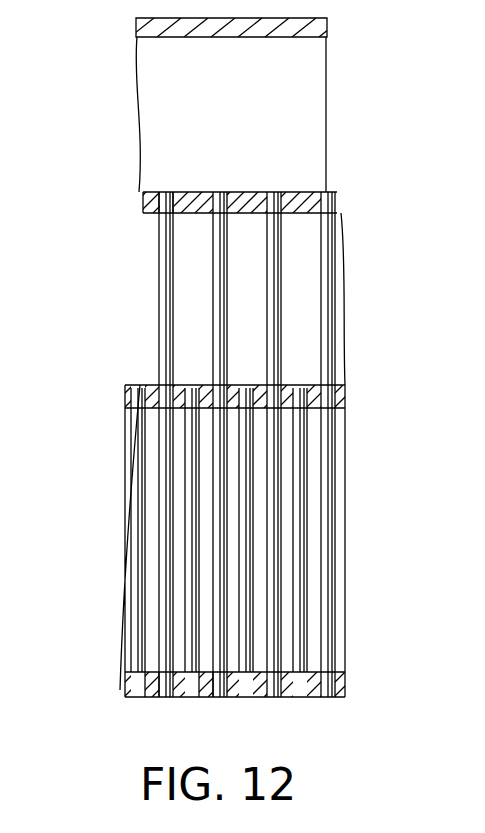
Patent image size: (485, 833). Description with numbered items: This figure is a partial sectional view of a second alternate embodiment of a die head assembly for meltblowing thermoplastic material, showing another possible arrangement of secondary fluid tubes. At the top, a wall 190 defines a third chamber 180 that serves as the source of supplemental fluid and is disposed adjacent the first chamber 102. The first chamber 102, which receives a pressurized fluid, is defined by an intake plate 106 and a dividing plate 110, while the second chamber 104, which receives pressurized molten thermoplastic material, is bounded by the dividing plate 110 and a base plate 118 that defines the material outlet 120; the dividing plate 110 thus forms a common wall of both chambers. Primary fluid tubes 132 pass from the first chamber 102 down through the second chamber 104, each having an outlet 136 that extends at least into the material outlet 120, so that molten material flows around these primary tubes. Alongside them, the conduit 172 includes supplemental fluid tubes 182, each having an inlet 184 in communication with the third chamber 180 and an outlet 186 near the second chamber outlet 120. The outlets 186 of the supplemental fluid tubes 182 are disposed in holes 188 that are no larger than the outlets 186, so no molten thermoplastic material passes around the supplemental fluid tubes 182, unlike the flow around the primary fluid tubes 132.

The wall 190 is at (136, 25).
The third chamber 180 is at (250, 122).
The intake plate 106 is at (145, 203).
The inlet 184 is at (165, 193).
The supplemental fluid tube 182 is at (165, 287).
The conduit 172 is at (144, 323).
The first chamber 102 is at (247, 297).
The dividing plate 110 is at (128, 398).
The second chamber 104 is at (317, 428).
The fluid tube 132 is at (137, 443).
The material outlet 120 is at (131, 672).
The base plate 118 is at (345, 688).
The outlet 136 is at (138, 698).
The hole 188 is at (162, 698).
The outlet 186 is at (170, 700).